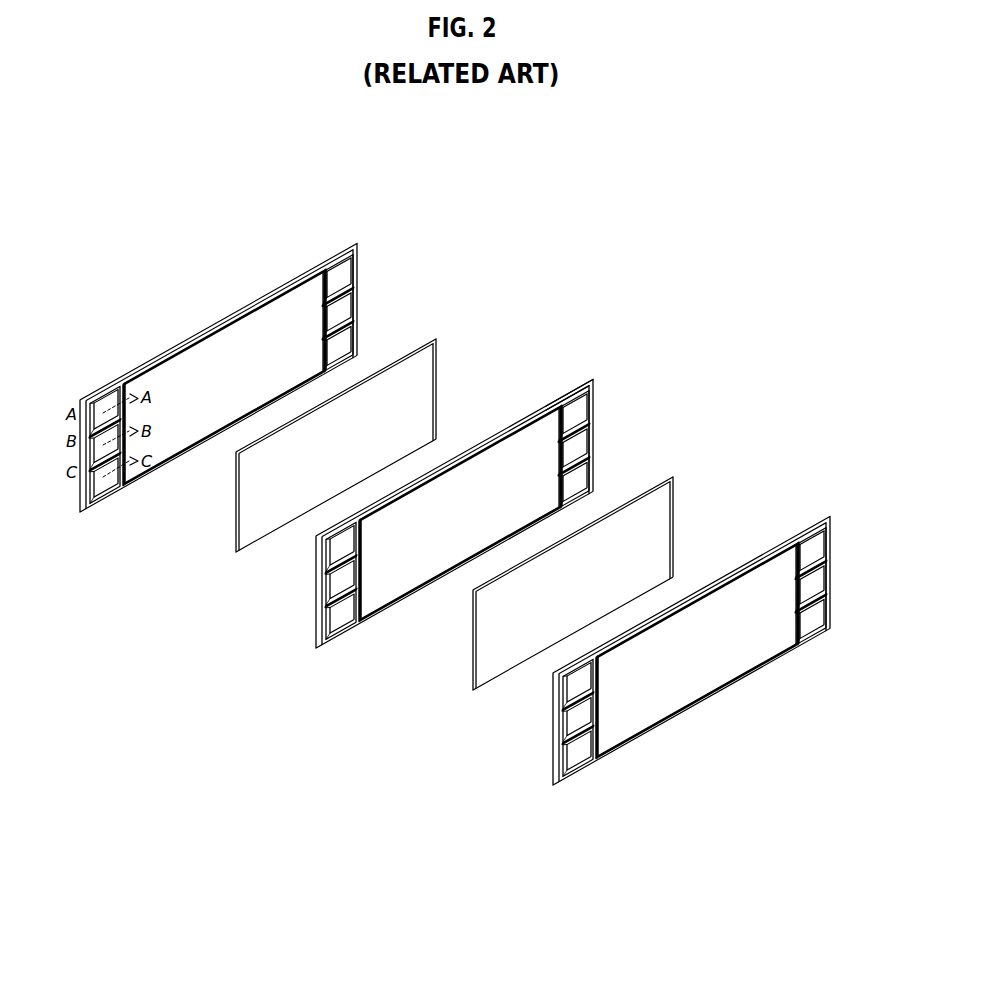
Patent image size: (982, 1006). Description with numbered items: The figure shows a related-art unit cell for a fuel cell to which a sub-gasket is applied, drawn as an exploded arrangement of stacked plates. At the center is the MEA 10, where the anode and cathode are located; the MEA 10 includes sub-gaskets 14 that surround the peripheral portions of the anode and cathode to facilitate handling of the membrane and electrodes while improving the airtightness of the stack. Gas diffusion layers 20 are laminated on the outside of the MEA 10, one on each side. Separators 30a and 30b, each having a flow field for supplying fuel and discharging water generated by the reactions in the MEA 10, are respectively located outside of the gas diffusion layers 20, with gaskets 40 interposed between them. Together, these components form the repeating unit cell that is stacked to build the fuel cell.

The MEA 10 is at (491, 478).
The sub-gasket 14 is at (572, 390).
The gas diffusion layer 20 is at (434, 325).
The separator 30a is at (349, 233).
The separator 30b is at (818, 508).
The gasket 40 is at (107, 506).